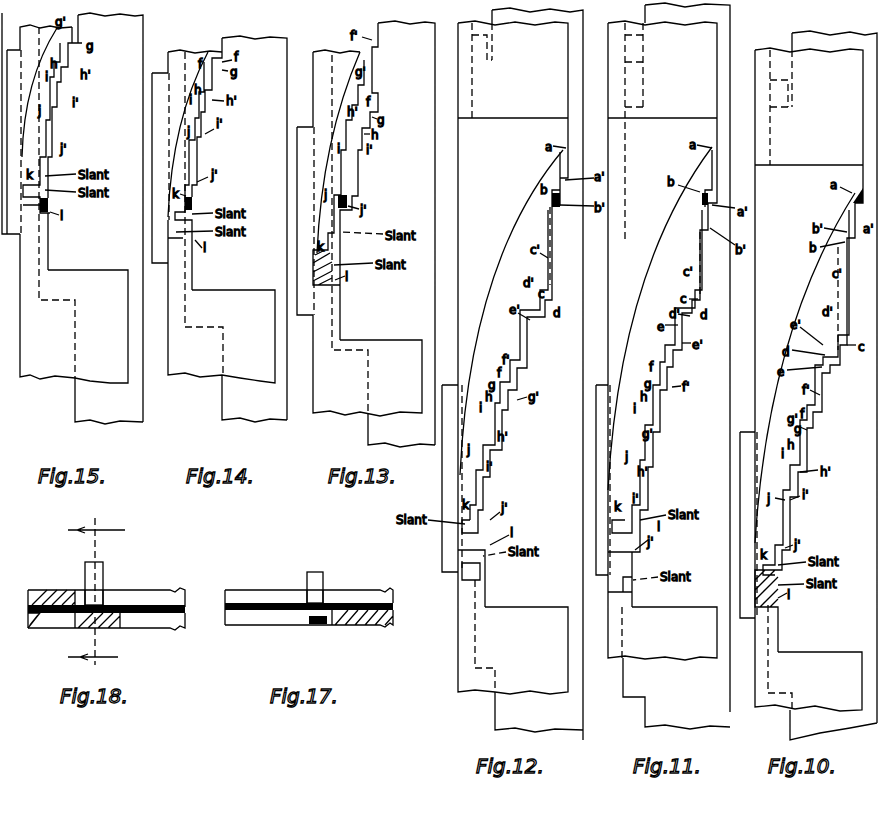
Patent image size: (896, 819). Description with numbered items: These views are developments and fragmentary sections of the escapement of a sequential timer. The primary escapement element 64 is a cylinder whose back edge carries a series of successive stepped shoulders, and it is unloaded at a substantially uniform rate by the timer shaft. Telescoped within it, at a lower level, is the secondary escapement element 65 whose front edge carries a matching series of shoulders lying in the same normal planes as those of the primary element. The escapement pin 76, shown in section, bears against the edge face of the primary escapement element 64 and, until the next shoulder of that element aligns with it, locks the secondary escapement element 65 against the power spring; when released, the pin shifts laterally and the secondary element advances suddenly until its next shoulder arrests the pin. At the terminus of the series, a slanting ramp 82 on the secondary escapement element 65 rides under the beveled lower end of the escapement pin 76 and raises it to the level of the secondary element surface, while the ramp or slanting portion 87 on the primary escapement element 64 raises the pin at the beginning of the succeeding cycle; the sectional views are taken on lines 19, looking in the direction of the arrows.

In FIG. 15, the primary escapement element 64 is at (65, 198).
In FIG. 14, the primary escapement element 64 is at (213, 216).
In FIG. 13, the primary escapement element 64 is at (359, 233).
In FIG. 12, the primary escapement element 64 is at (505, 357).
In FIG. 11, the primary escapement element 64 is at (656, 340).
In FIG. 10, the primary escapement element 64 is at (801, 379).
In FIG. 18, the primary escapement element 64 is at (153, 584).
In FIG. 17, the primary escapement element 64 is at (371, 584).
In FIG. 15, the secondary escapement element 65 is at (83, 218).
In FIG. 14, the secondary escapement element 65 is at (231, 229).
In FIG. 13, the secondary escapement element 65 is at (374, 234).
In FIG. 12, the secondary escapement element 65 is at (520, 374).
In FIG. 11, the secondary escapement element 65 is at (669, 366).
In FIG. 10, the secondary escapement element 65 is at (816, 385).
In FIG. 18, the secondary escapement element 65 is at (153, 636).
In FIG. 17, the secondary escapement element 65 is at (377, 627).
In FIG. 15, the escapement pin 76 is at (50, 206).
In FIG. 14, the escapement pin 76 is at (193, 203).
In FIG. 13, the escapement pin 76 is at (348, 200).
In FIG. 12, the escapement pin 76 is at (552, 200).
In FIG. 11, the escapement pin 76 is at (700, 203).
In FIG. 10, the escapement pin 76 is at (852, 200).
In FIG. 18, the escapement pin 76 is at (103, 570).
In FIG. 17, the escapement pin 76 is at (306, 572).
In FIG. 18, the slanting ramp 82 is at (28, 625).
In FIG. 17, the slanting ramp 82 is at (330, 622).
In FIG. 18, the ramp or slanting portion 87 is at (78, 590).
In FIG. 18, the section line 19 is at (90, 587).